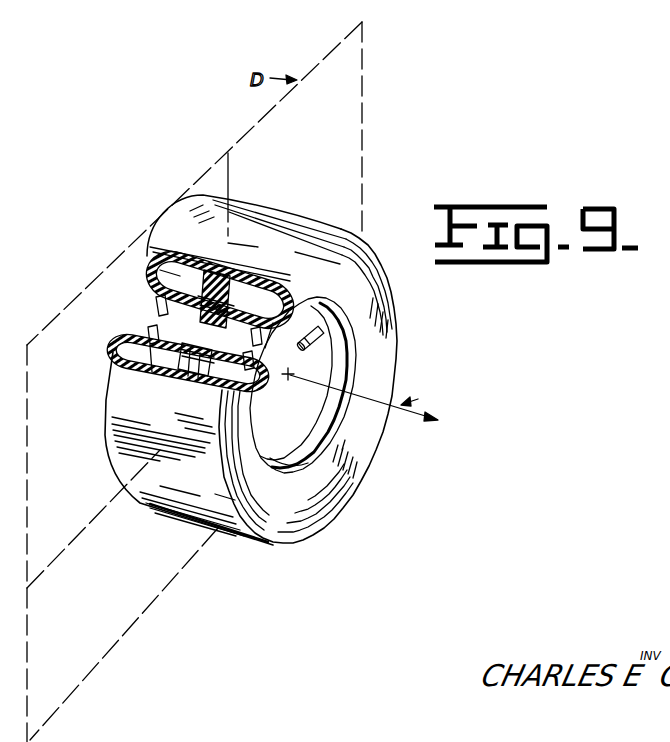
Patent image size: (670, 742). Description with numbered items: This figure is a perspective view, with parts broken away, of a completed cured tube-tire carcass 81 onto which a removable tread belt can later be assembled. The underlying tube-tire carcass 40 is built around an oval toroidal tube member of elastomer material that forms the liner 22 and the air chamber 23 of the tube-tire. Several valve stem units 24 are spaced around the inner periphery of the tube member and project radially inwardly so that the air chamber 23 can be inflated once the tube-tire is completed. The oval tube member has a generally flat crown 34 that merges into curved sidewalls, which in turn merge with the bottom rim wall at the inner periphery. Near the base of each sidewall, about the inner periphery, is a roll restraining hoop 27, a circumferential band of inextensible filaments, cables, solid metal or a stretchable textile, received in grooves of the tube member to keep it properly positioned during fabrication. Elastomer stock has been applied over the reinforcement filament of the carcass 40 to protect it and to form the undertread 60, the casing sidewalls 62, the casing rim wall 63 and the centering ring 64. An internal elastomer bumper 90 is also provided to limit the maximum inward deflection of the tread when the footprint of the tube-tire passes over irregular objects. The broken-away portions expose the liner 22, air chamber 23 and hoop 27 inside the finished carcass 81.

The tube-tire carcass 40 is at (190, 208).
The undertread 60 is at (246, 213).
The crown 34 is at (245, 252).
The liner 22 is at (150, 266).
The air chamber 23 is at (174, 281).
The roll restraining hoop 27 is at (152, 305).
The internal elastomer bumper 90 is at (178, 466).
The cured tube-tire carcass 81 is at (124, 489).
The valve stem unit 24 is at (322, 333).
The casing sidewall 62 is at (384, 330).
The centering ring 64 is at (320, 351).
The casing rim wall 63 is at (328, 428).